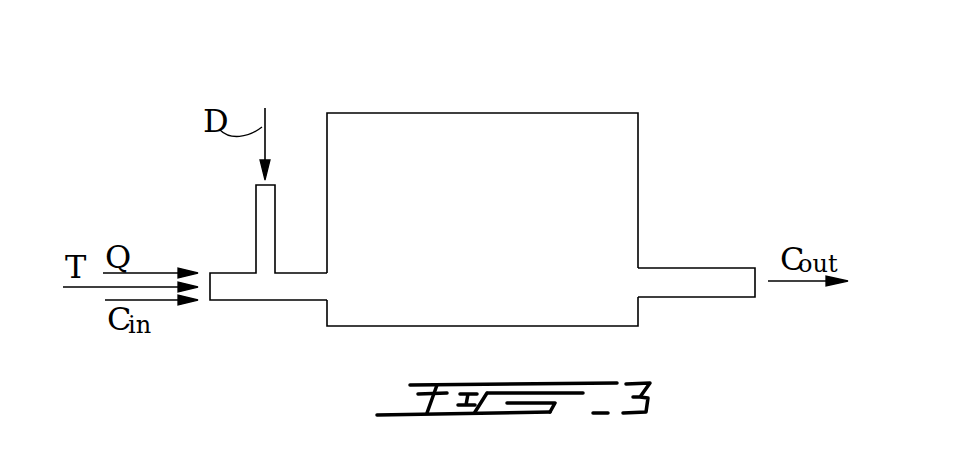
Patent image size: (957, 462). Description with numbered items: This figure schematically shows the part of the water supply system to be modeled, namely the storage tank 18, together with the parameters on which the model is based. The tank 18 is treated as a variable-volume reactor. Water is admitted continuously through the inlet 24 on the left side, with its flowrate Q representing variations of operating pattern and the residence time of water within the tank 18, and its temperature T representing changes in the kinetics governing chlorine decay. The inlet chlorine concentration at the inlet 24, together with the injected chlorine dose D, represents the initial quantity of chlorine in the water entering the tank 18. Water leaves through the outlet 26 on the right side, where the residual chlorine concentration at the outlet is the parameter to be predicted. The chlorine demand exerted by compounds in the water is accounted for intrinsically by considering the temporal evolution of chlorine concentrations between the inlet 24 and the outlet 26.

The storage tank 18 is at (500, 143).
The inlet 24 is at (277, 291).
The outlet 26 is at (675, 286).